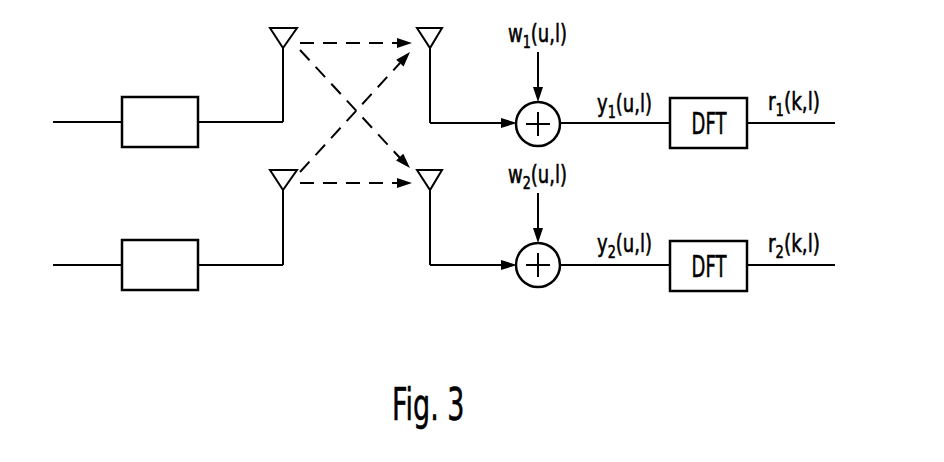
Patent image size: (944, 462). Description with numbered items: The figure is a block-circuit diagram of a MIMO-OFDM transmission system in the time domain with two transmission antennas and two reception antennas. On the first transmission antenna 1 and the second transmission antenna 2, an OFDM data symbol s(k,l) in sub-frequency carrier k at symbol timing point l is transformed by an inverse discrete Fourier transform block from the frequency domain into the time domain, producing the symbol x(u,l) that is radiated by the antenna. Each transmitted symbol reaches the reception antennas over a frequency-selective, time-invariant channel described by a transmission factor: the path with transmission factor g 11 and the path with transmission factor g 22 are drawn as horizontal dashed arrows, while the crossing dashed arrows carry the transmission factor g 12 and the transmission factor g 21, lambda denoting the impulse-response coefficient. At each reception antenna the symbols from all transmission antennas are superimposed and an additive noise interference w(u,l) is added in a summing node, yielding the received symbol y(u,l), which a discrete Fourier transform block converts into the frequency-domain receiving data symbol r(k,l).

The first antenna branch 1 is at (175, 87).
The second antenna branch 2 is at (175, 230).
The transmission factor g11 11 is at (356, 27).
The transmission factor g12 12 is at (355, 105).
The transmission factor g21 21 is at (355, 115).
The transmission factor g22 22 is at (356, 198).